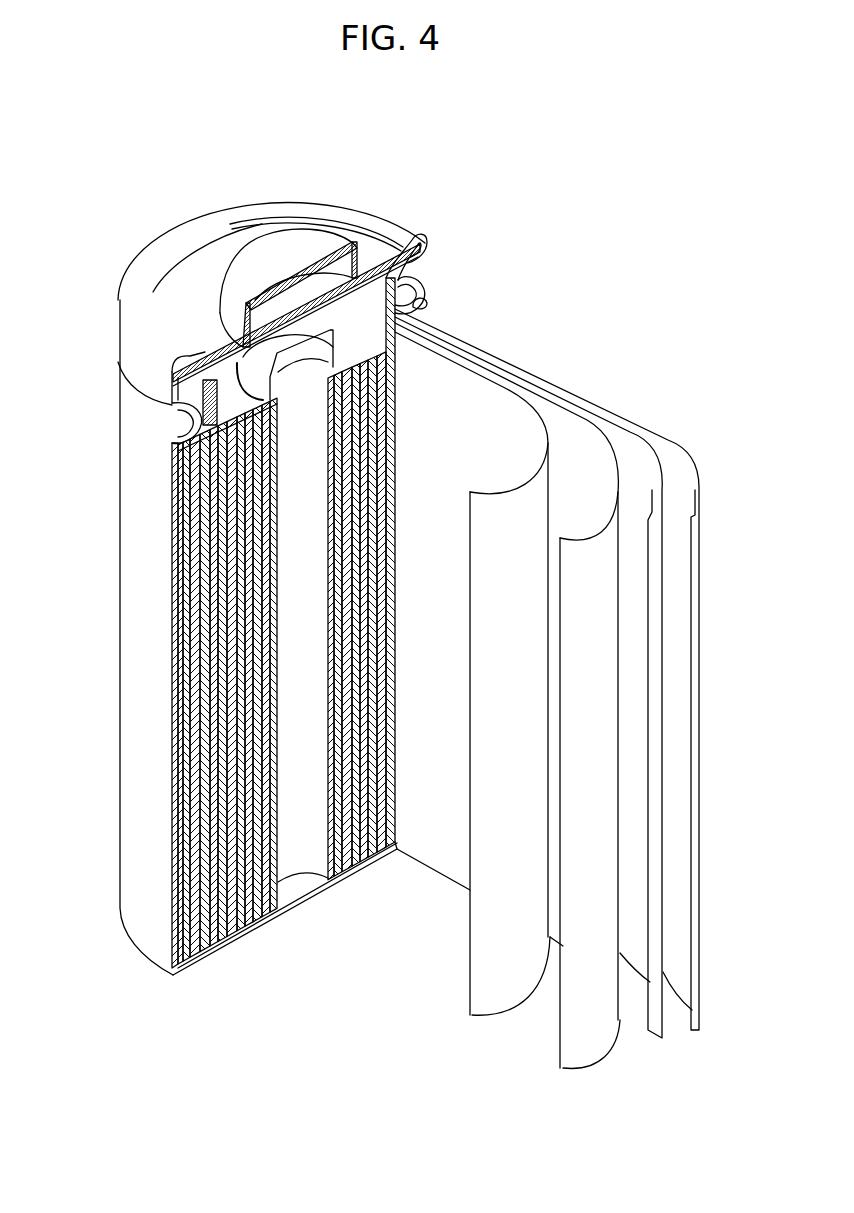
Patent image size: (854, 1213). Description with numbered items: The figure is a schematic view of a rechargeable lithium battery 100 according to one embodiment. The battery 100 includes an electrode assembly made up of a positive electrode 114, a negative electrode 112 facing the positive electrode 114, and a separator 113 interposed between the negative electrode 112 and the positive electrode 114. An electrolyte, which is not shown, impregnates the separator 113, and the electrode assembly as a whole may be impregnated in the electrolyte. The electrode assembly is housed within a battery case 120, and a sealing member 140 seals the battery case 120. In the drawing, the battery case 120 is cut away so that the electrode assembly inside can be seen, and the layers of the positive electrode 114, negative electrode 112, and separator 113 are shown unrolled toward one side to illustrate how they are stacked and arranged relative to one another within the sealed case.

The rechargeable lithium battery 100 is at (488, 180).
The negative electrode 112 is at (693, 490).
The separator 113 is at (502, 392).
The positive electrode 114 is at (582, 445).
The battery case 120 is at (137, 590).
The sealing member 140 is at (242, 260).